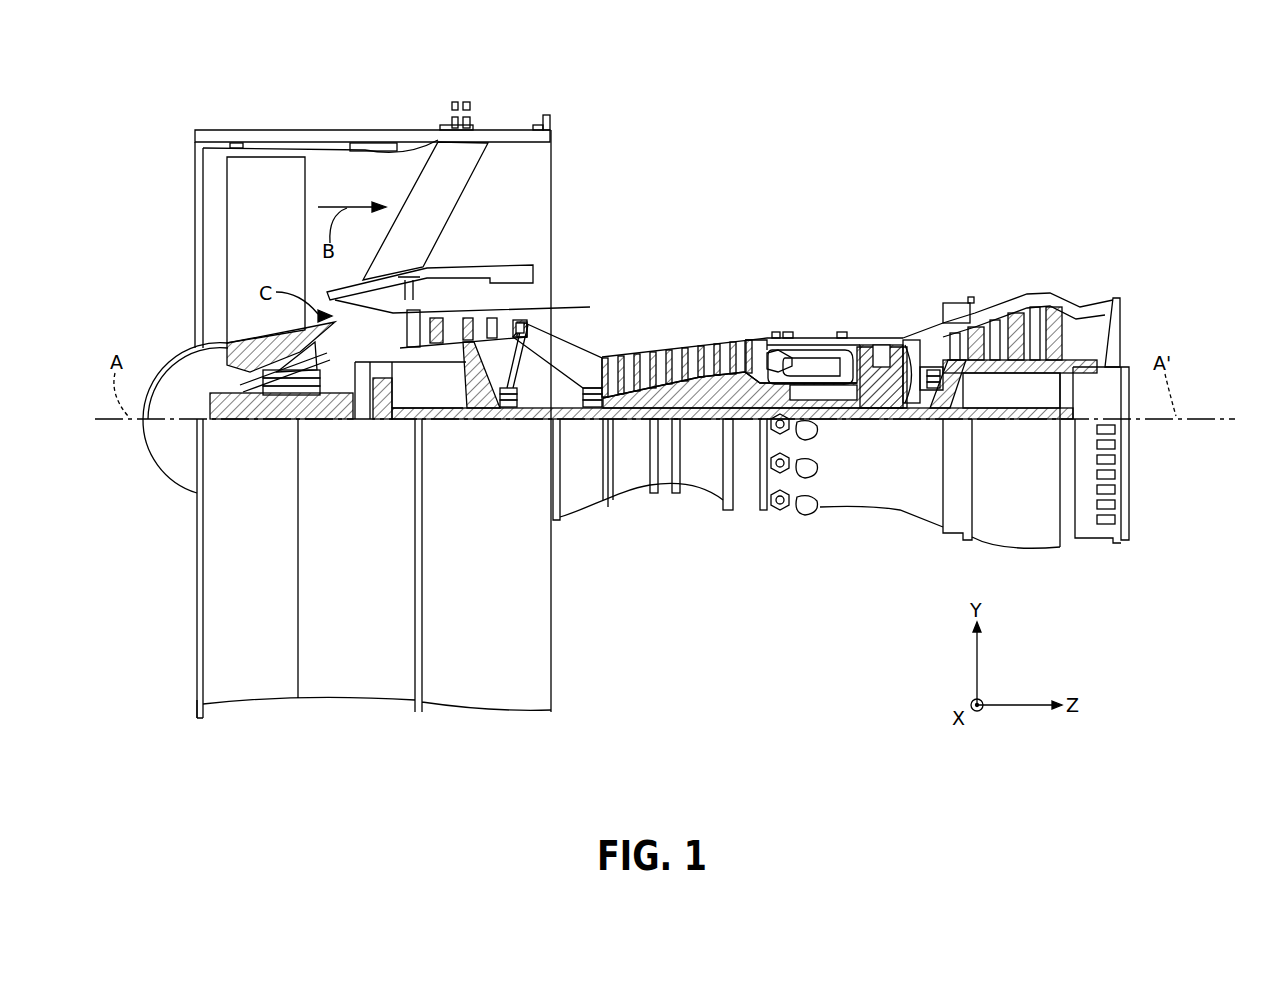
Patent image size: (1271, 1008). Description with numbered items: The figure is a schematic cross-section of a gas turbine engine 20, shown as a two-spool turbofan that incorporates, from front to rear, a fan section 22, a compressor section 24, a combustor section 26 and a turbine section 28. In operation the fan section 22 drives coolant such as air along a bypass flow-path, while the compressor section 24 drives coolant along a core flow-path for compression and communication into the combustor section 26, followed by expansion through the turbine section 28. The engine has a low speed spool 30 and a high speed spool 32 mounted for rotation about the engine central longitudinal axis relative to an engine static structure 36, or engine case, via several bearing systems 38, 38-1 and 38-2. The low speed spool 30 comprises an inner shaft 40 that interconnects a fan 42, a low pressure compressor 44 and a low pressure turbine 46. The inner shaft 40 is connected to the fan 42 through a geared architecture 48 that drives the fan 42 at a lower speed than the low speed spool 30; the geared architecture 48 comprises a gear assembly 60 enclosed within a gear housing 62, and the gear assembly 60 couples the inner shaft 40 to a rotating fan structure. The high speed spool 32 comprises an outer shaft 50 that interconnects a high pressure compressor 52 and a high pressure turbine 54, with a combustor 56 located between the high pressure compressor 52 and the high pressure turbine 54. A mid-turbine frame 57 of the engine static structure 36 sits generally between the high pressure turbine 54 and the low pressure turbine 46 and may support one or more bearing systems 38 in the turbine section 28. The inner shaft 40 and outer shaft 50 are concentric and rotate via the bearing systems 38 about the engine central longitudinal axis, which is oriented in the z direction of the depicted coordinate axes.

The gas turbine engine 20 is at (858, 140).
The fan section 22 is at (395, 114).
The compressor section 24 is at (420, 235).
The combustor section 26 is at (865, 235).
The turbine section 28 is at (1065, 235).
The low speed spool 30 is at (708, 440).
The high speed spool 32 is at (757, 347).
The engine static structure 36 is at (745, 488).
The bearing system 38 is at (927, 420).
The bearing system 38-1 is at (268, 410).
The bearing system 38-2 is at (507, 423).
The inner shaft 40 is at (573, 421).
The fan 42 is at (264, 262).
The low pressure compressor 44 is at (540, 307).
The low pressure turbine 46 is at (1007, 296).
The geared architecture 48 is at (375, 440).
The outer shaft 50 is at (826, 425).
The high pressure compressor 52 is at (703, 347).
The high pressure turbine 54 is at (880, 342).
The combustor 56 is at (823, 337).
The mid-turbine frame 57 is at (922, 320).
The gear assembly 60 is at (393, 392).
The gear housing 62 is at (393, 365).